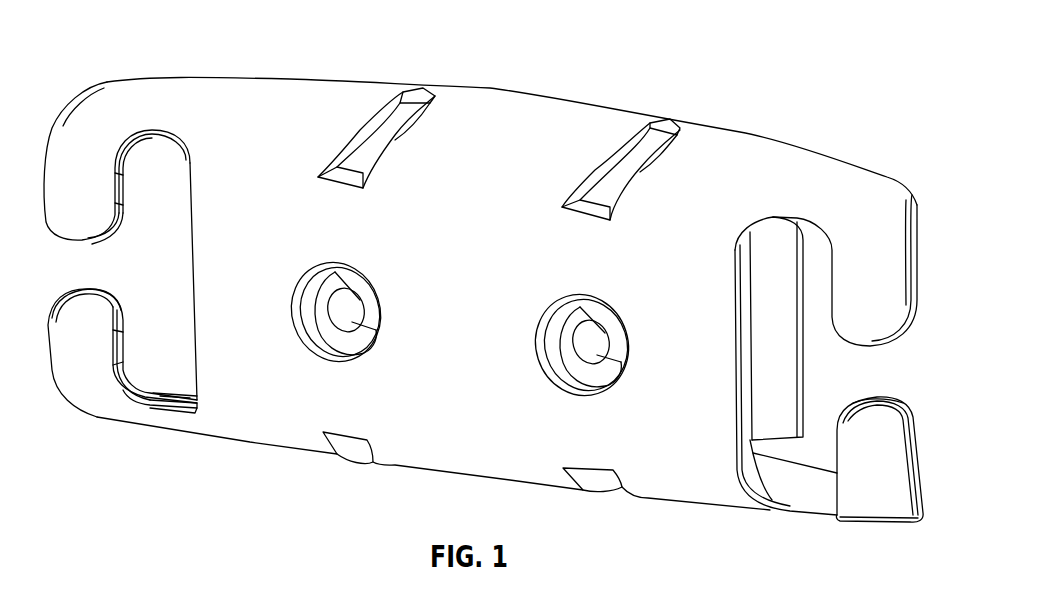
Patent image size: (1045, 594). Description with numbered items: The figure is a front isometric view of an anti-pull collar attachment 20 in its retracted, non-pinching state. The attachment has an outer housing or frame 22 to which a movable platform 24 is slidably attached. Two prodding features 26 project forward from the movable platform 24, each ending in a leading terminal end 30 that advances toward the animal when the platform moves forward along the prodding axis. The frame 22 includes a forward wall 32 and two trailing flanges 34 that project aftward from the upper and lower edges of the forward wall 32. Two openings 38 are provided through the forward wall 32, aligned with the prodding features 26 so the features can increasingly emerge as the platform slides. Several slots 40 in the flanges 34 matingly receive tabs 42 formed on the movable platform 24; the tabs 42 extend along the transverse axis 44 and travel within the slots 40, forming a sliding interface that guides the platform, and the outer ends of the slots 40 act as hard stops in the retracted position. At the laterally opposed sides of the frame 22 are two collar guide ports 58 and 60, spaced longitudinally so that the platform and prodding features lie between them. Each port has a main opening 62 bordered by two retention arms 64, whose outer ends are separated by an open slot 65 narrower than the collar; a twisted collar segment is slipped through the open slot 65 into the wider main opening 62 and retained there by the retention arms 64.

The anti-pull collar attachment 20 is at (815, 31).
The frame 22 is at (296, 458).
The movable platform 24 is at (768, 408).
The prodding features 26 is at (358, 292).
The leading terminal end 30 is at (333, 316).
The forward wall 32 is at (492, 235).
The trailing flanges 34 is at (492, 105).
The openings 38 is at (302, 274).
The slots 40 is at (378, 118).
The tabs 42 is at (423, 90).
The transverse axis 44 is at (765, 362).
The collar guide port 58 is at (160, 412).
The collar guide port 60 is at (822, 492).
The main opening 62 is at (175, 361).
The retention arms 64 is at (82, 140).
The open slot 65 is at (91, 278).